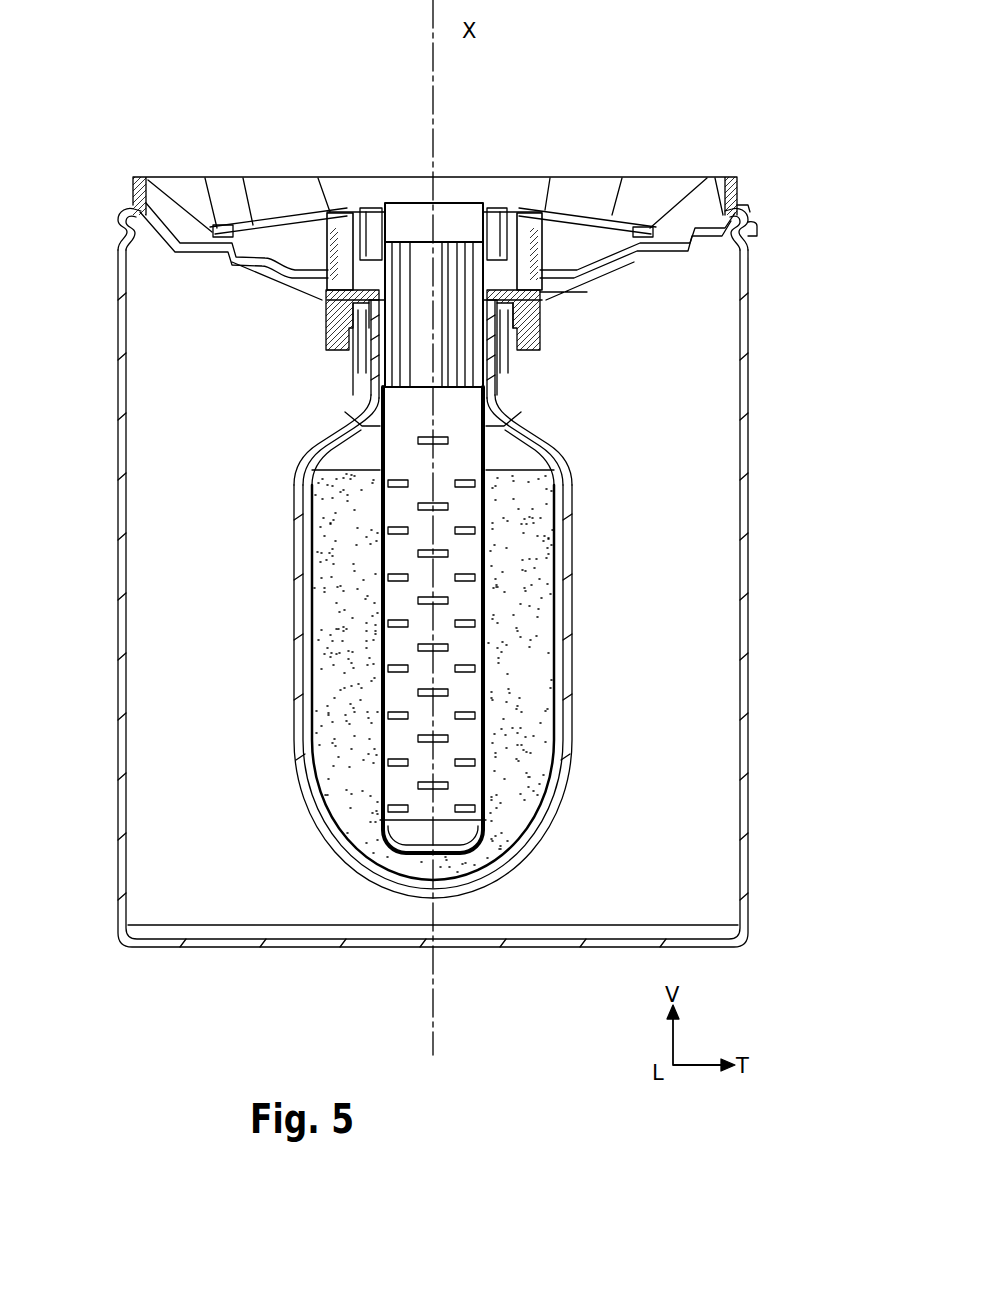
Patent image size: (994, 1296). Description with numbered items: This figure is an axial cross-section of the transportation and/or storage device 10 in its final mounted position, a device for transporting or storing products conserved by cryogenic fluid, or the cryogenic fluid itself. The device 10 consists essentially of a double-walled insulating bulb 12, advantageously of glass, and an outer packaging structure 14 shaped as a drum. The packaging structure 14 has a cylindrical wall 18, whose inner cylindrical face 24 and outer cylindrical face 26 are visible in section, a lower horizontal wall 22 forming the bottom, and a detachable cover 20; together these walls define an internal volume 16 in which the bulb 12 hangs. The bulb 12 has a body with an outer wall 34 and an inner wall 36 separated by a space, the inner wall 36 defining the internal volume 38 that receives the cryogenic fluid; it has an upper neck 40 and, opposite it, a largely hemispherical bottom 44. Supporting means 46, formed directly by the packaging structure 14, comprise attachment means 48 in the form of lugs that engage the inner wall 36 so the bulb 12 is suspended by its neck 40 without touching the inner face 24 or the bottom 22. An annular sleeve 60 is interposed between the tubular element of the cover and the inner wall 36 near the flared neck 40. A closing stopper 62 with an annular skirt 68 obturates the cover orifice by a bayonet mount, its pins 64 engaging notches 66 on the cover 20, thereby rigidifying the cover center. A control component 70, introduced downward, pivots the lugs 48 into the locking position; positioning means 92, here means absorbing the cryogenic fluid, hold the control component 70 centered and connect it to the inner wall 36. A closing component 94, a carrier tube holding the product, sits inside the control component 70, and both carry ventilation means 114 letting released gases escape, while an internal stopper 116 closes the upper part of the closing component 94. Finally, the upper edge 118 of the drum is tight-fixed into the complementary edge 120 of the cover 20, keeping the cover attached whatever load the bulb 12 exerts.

The transportation and/or storage device 10 is at (710, 147).
The double-walled insulating bulb 12 is at (430, 643).
The outer packaging structure 14 is at (756, 378).
The internal volume 16 is at (700, 343).
The cylindrical wall 18 is at (745, 683).
The detachable cover 20 is at (280, 192).
The lower horizontal wall 22 is at (255, 948).
The inner cylindrical face 24 is at (746, 498).
The outer cylindrical face 26 is at (750, 838).
The outer wall 34 is at (462, 695).
The inner wall 36 is at (333, 462).
The internal volume 38 is at (510, 813).
The upper neck 40 is at (514, 368).
The bottom 44 is at (400, 888).
The supporting means 46 is at (326, 305).
The attachment means 48 is at (355, 372).
The annular sleeve 60 is at (350, 420).
The closing stopper 62 is at (478, 208).
The pins 64 is at (640, 212).
The notches 66 is at (643, 248).
The annular skirt 68 is at (527, 330).
The control component 70 is at (438, 620).
The positioning means 92 is at (518, 650).
The closing component 94 is at (450, 749).
The ventilation means 114 is at (445, 440).
The internal stopper 116 is at (410, 262).
The upper edge 118 is at (760, 230).
The complementary edge 120 is at (750, 208).